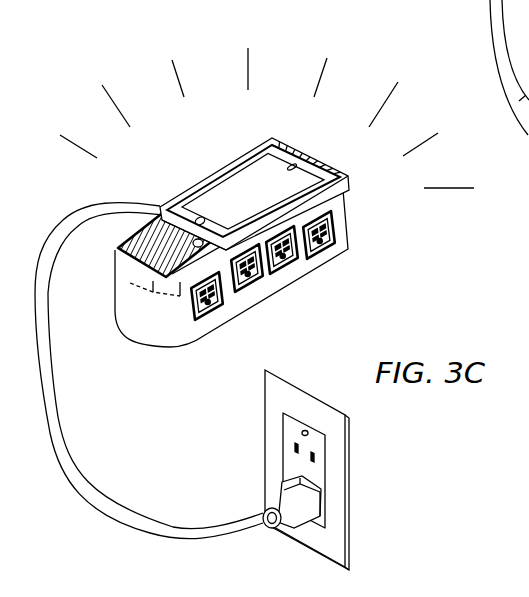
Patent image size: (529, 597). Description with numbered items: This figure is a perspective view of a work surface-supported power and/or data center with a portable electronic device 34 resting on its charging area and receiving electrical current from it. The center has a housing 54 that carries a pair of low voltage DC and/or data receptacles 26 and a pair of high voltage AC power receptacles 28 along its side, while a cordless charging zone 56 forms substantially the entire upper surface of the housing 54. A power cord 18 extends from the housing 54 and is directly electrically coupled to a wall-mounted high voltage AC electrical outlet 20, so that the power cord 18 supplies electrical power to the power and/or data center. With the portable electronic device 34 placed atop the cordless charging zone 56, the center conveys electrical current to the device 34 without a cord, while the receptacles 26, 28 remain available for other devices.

The power cord 18 is at (107, 500).
The wall-mounted high voltage AC electrical outlet 20 is at (297, 397).
The low voltage DC and/or data receptacles 26 is at (205, 322).
The high voltage AC power receptacles 28 is at (276, 284).
The portable electronic device 34 is at (225, 187).
The housing 54 is at (122, 316).
The cordless charging zone 56 is at (150, 230).